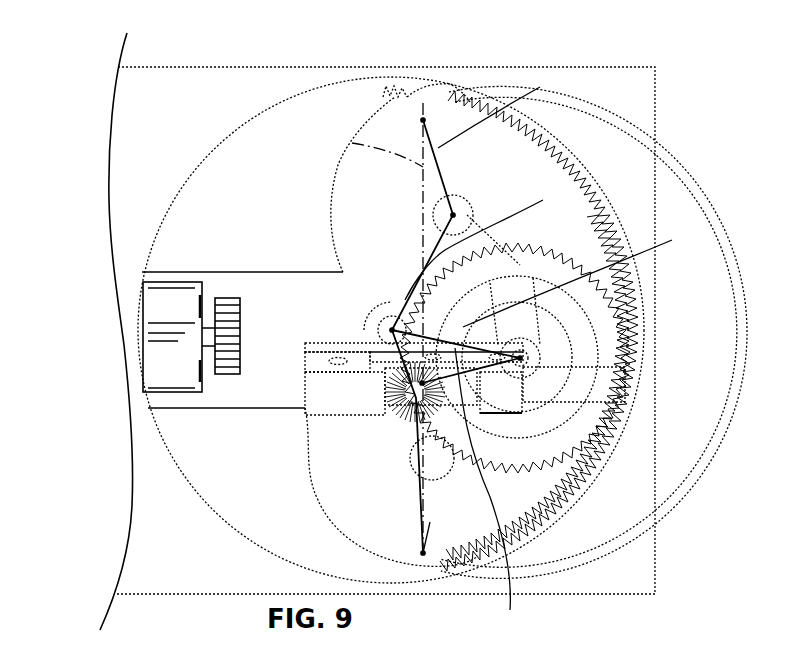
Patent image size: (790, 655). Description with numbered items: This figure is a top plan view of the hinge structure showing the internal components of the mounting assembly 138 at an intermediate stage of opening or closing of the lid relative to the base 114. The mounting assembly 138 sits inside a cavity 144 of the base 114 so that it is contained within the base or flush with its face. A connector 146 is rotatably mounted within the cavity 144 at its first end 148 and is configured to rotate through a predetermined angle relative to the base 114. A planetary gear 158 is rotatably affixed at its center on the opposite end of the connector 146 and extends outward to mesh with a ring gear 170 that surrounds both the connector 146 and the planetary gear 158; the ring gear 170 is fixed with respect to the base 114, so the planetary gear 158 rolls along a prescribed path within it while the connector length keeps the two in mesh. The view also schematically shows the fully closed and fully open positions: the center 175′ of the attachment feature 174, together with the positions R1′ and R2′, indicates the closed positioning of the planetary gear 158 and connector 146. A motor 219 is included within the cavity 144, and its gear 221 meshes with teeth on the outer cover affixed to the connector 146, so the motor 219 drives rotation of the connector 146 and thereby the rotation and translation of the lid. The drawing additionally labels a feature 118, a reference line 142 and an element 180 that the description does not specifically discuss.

The base 114 is at (128, 94).
The ring gear 118 is at (654, 389).
The mounting assembly 138 is at (577, 232).
The axis 142 is at (345, 142).
The cavity 144 is at (346, 188).
The connector 146 is at (477, 328).
The first end 148 is at (378, 322).
The planetary gear 158 is at (537, 450).
The ring gear 170 is at (583, 165).
The attachment feature 174 is at (399, 419).
The center of attachment feature 175′ is at (423, 553).
The slide bar 180 is at (591, 400).
The motor 219 is at (150, 357).
The gear 221 is at (225, 310).
The position R1 R1′ is at (453, 518).
The position R2 R2′ is at (417, 450).